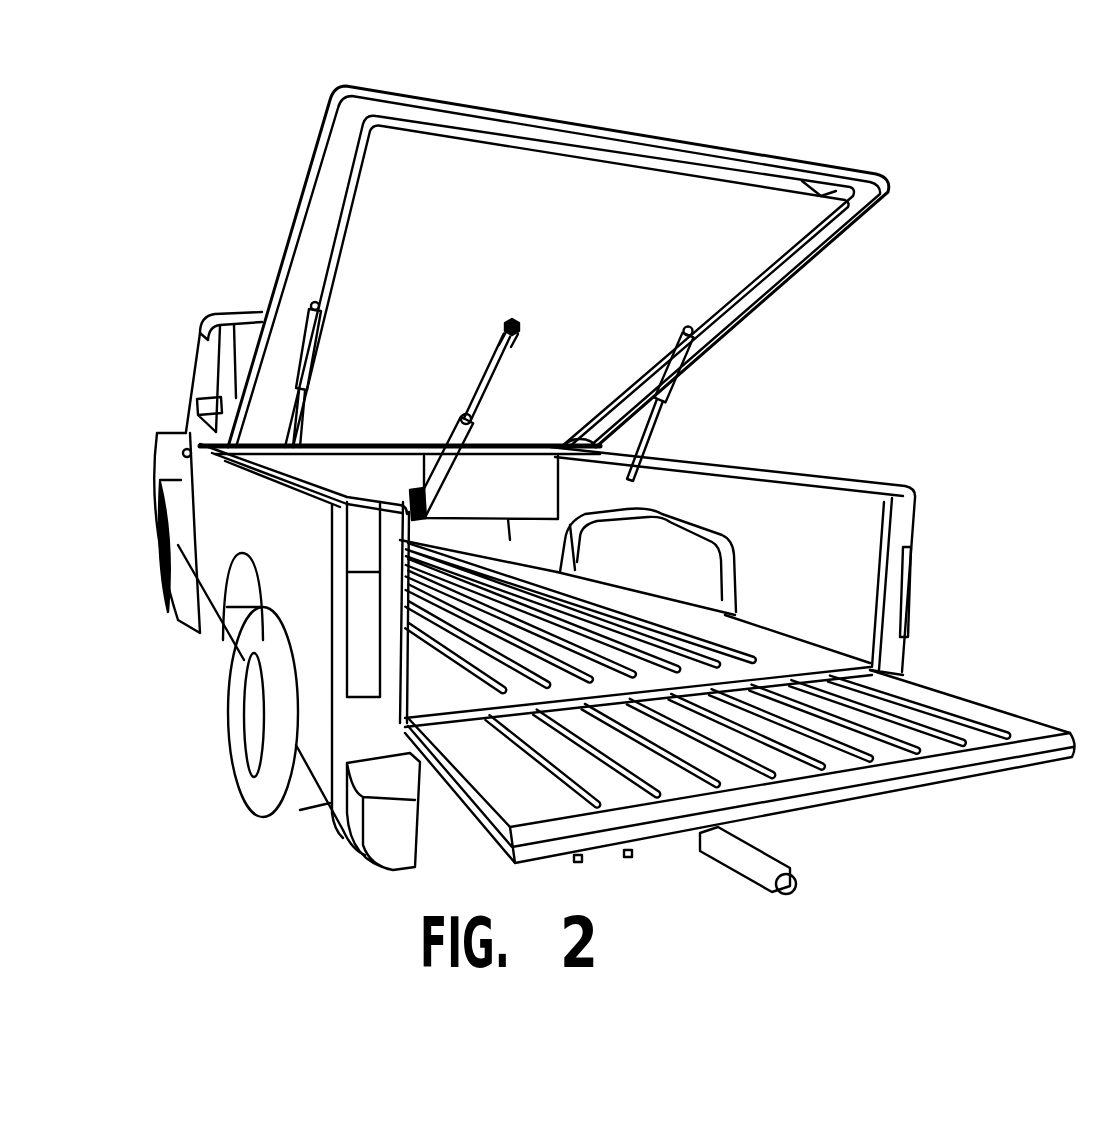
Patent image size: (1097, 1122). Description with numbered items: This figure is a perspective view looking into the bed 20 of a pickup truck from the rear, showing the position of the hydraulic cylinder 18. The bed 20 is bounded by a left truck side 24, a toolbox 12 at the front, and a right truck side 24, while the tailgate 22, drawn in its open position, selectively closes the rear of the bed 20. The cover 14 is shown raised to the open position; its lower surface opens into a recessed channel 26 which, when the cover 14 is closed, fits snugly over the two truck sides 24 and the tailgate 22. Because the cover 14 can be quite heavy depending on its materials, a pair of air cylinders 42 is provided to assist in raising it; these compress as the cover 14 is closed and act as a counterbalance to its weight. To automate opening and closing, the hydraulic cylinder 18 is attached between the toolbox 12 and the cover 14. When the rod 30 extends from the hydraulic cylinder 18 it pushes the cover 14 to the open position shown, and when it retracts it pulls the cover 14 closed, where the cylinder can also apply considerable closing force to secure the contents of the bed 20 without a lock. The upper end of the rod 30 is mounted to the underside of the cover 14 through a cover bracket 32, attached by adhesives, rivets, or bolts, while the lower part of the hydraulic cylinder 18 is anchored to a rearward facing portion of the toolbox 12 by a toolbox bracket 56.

The toolbox 12 is at (543, 505).
The cover 14 is at (777, 157).
The hydraulic cylinder 18 is at (443, 443).
The bed 20 is at (780, 660).
The tailgate 22 is at (827, 797).
The truck side 24 is at (860, 480).
The recessed channel 26 is at (322, 214).
The rod 30 is at (490, 372).
The cover bracket 32 is at (511, 320).
The air cylinders 42 is at (300, 392).
The toolbox bracket 56 is at (423, 517).